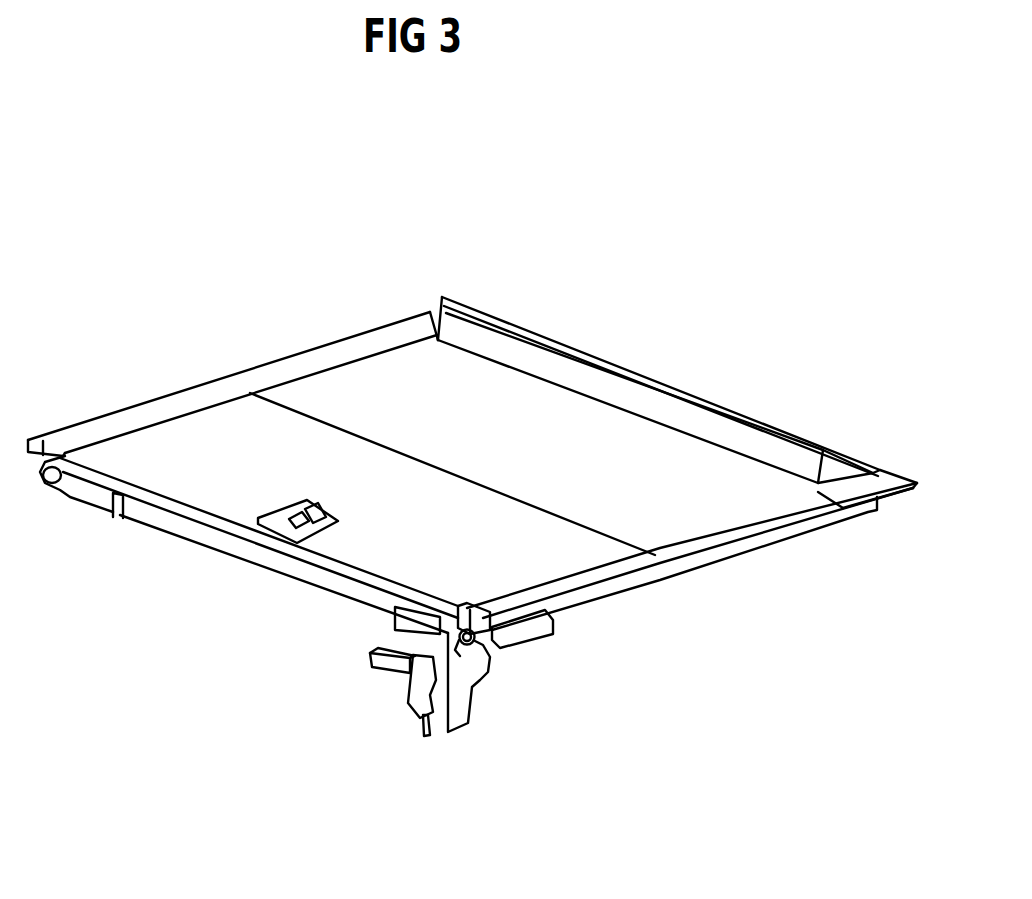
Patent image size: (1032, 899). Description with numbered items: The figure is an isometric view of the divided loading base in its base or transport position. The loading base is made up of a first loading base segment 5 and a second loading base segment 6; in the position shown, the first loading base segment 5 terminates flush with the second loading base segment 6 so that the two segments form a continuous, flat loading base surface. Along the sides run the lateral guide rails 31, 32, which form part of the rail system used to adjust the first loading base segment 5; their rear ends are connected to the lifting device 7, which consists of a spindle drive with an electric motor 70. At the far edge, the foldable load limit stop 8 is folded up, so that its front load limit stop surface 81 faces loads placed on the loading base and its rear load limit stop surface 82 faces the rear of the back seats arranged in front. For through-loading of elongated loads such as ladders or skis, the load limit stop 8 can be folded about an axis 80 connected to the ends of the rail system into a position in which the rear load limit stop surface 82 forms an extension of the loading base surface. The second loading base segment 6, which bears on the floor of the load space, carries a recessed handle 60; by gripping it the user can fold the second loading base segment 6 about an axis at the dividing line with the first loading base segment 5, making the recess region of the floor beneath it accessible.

The lateral guide rail 31 is at (258, 375).
The lateral guide rail 32 is at (768, 518).
The first loading base segment 5 is at (660, 518).
The second loading base segment 6 is at (227, 508).
The recessed handle 60 is at (293, 527).
The lifting device 7 is at (480, 719).
The electric motor 70 is at (390, 670).
The foldable load limit stop 8 is at (653, 378).
The axis 80 is at (880, 470).
The front load limit stop surface 81 is at (697, 428).
The rear load limit stop surface 82 is at (687, 392).